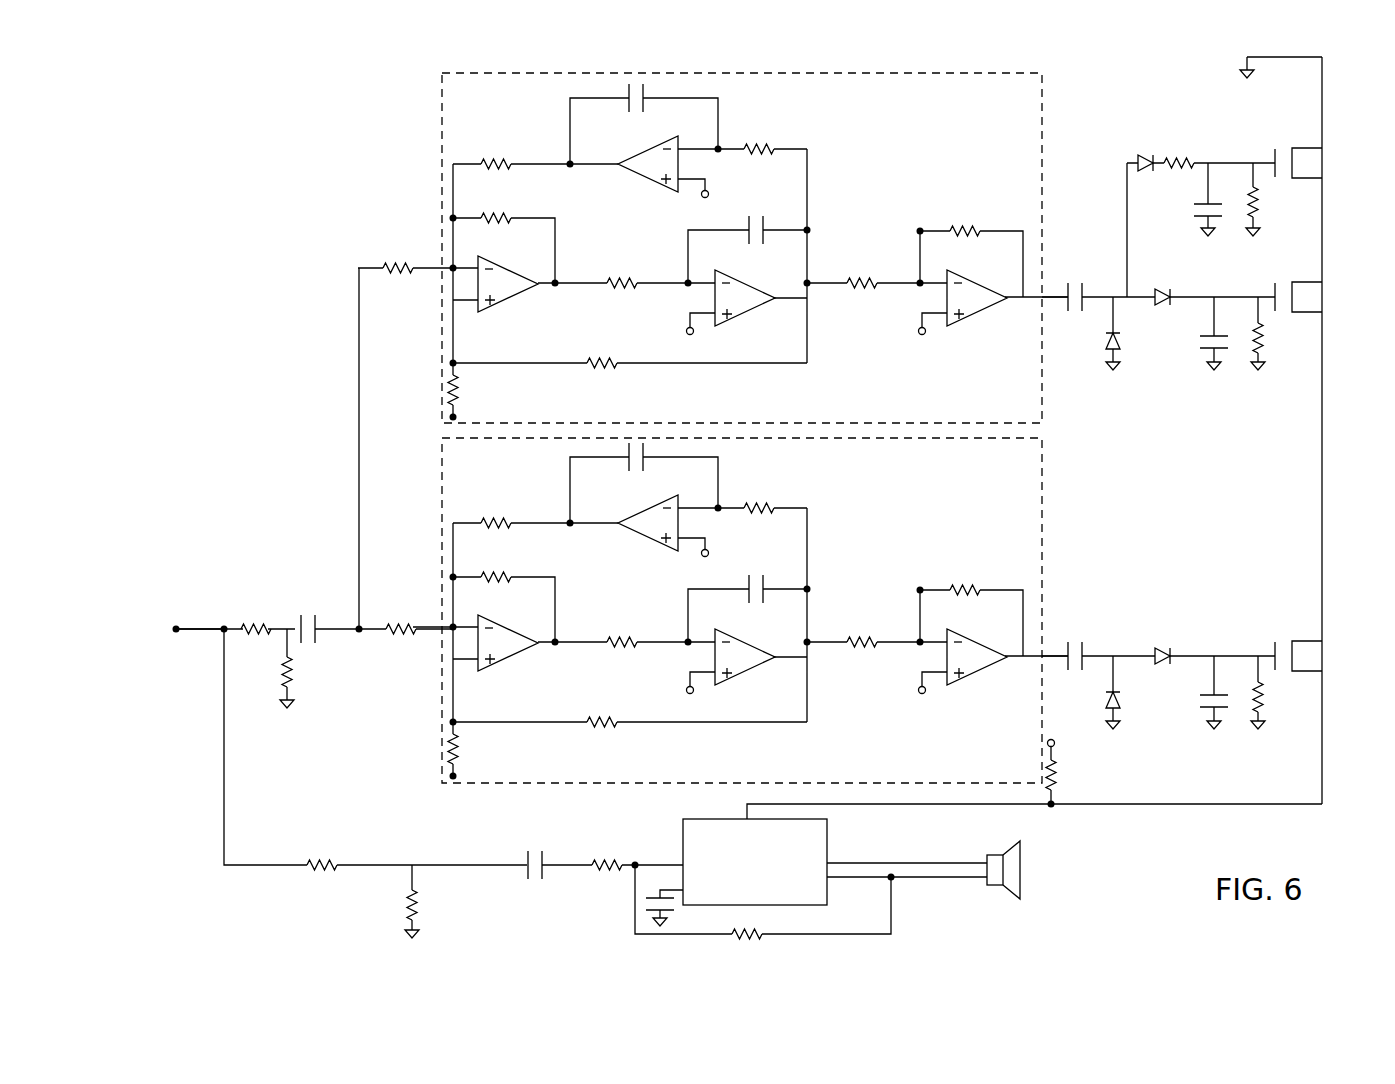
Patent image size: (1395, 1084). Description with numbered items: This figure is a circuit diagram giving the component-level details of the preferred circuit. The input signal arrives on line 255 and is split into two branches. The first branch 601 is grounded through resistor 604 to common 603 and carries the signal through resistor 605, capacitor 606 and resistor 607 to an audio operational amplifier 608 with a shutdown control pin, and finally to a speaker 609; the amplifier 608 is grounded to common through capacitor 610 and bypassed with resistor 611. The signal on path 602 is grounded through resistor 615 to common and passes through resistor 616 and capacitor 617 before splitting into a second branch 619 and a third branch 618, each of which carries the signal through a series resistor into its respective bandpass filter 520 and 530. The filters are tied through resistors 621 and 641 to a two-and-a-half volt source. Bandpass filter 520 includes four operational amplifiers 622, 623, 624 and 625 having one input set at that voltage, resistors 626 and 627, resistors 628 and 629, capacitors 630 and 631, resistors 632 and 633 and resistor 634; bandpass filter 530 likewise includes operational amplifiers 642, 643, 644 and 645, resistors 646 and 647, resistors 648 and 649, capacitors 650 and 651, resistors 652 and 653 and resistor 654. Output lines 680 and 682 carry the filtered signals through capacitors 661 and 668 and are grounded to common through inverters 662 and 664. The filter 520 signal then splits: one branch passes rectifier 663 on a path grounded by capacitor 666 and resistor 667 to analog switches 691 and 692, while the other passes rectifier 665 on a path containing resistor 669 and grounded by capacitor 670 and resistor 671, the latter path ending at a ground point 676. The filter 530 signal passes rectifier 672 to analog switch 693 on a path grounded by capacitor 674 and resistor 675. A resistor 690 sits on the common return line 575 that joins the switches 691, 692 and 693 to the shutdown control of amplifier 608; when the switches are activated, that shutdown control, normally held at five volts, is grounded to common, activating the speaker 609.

The bandpass filter 520 is at (691, 248).
The bandpass filter 530 is at (778, 610).
The line 255 is at (189, 631).
The first branch 601 is at (233, 747).
The path 602 is at (195, 593).
The common 603 is at (436, 935).
The resistor 604 is at (380, 897).
The resistor 605 is at (315, 849).
The capacitor 606 is at (533, 850).
The resistor 607 is at (615, 846).
The audio operational amplifier 608 is at (753, 841).
The speaker 609 is at (1035, 868).
The capacitor 610 is at (622, 909).
The resistor 611 is at (774, 922).
The resistor 615 is at (317, 668).
The resistor 616 is at (263, 613).
The capacitor 617 is at (316, 614).
The third branch 618 is at (401, 647).
The second branch 619 is at (380, 245).
The resistor 621 is at (478, 390).
The operational amplifier 622 is at (508, 294).
The operational amplifier 623 is at (748, 308).
The operational amplifier 624 is at (644, 169).
The operational amplifier 625 is at (977, 311).
The resistor 626 is at (503, 145).
The resistor 627 is at (608, 379).
The resistor 628 is at (503, 203).
The resistor 629 is at (864, 266).
The capacitor 630 is at (629, 110).
The capacitor 631 is at (772, 216).
The resistor 632 is at (759, 132).
The resistor 633 is at (629, 269).
The resistor 634 is at (968, 219).
The resistor 641 is at (480, 749).
The operational amplifier 642 is at (508, 654).
The operational amplifier 643 is at (748, 650).
The operational amplifier 644 is at (640, 526).
The operational amplifier 645 is at (977, 665).
The resistor 646 is at (502, 510).
The resistor 647 is at (609, 737).
The resistor 648 is at (498, 562).
The resistor 649 is at (858, 627).
The capacitor 650 is at (633, 470).
The capacitor 651 is at (759, 575).
The resistor 652 is at (761, 494).
The resistor 653 is at (629, 628).
The resistor 654 is at (971, 576).
The capacitor 661 is at (1081, 283).
The inverter 662 is at (1090, 333).
The rectifier 663 is at (1176, 282).
The inverter 664 is at (1090, 692).
The rectifier 665 is at (1128, 148).
The capacitor 666 is at (1185, 333).
The resistor 667 is at (1281, 333).
The capacitor 668 is at (1081, 640).
The resistor 669 is at (1190, 149).
The capacitor 670 is at (1181, 199).
The resistor 671 is at (1278, 199).
The rectifier 672 is at (1171, 641).
The capacitor 674 is at (1187, 692).
The resistor 675 is at (1283, 692).
The ground connection 676 is at (1251, 75).
The output line 680 is at (1072, 233).
The output line 682 is at (1072, 601).
The volume control resistor 690 is at (1080, 772).
The analog switch 691 is at (1314, 163).
The analog switch 692 is at (1315, 297).
The analog switch 693 is at (1311, 656).
The common return line 575 is at (1289, 451).